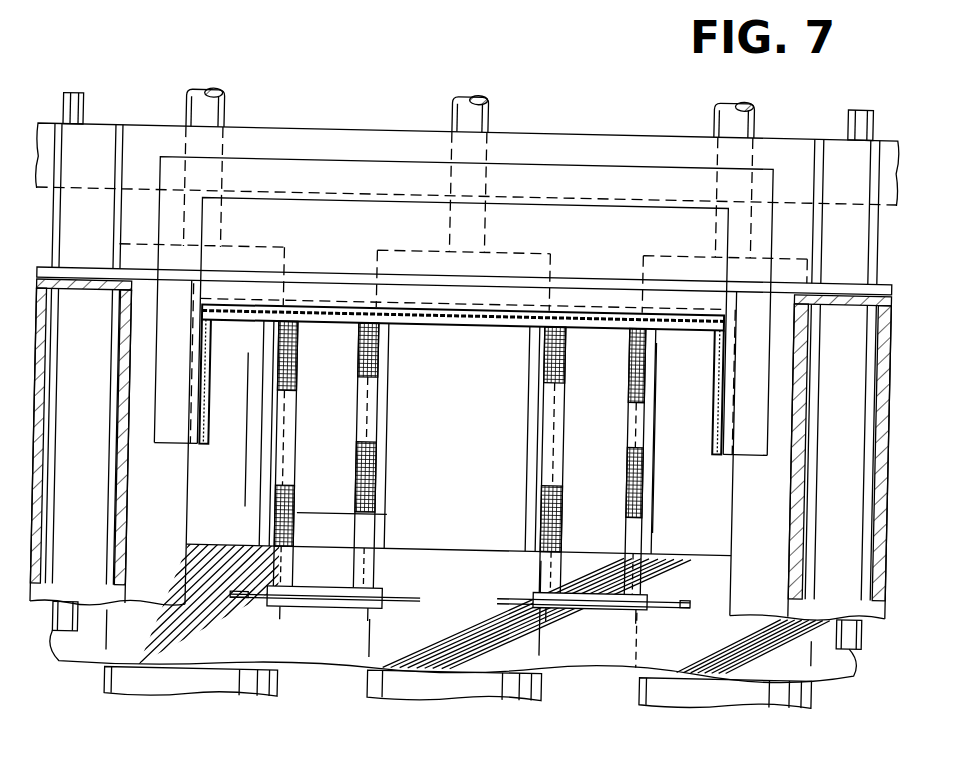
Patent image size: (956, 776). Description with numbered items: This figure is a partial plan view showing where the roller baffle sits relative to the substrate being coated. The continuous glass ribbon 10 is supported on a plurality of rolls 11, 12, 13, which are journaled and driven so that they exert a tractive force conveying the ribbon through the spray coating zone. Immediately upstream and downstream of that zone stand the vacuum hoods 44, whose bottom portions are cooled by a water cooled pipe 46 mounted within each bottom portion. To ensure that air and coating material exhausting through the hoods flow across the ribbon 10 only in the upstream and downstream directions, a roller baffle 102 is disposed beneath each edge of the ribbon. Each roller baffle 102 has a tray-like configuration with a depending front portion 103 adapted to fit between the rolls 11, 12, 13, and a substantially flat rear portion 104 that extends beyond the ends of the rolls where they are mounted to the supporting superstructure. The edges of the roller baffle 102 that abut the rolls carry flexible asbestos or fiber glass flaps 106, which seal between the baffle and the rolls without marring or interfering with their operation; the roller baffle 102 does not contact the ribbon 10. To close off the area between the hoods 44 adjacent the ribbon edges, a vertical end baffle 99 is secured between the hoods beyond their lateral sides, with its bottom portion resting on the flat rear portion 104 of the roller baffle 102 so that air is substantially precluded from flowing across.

The continuous glass ribbon 10 is at (526, 650).
The roll 11 is at (714, 680).
The roll 12 is at (451, 682).
The roll 13 is at (186, 680).
The vacuum hood 44 is at (107, 465).
The water cooled pipe 46 is at (83, 108).
The vertical end baffle 99 is at (578, 279).
The roller baffle 102 is at (552, 158).
The depending front portion 103 is at (354, 398).
The rear portion 104 is at (353, 238).
The flexible flap 106 is at (622, 503).